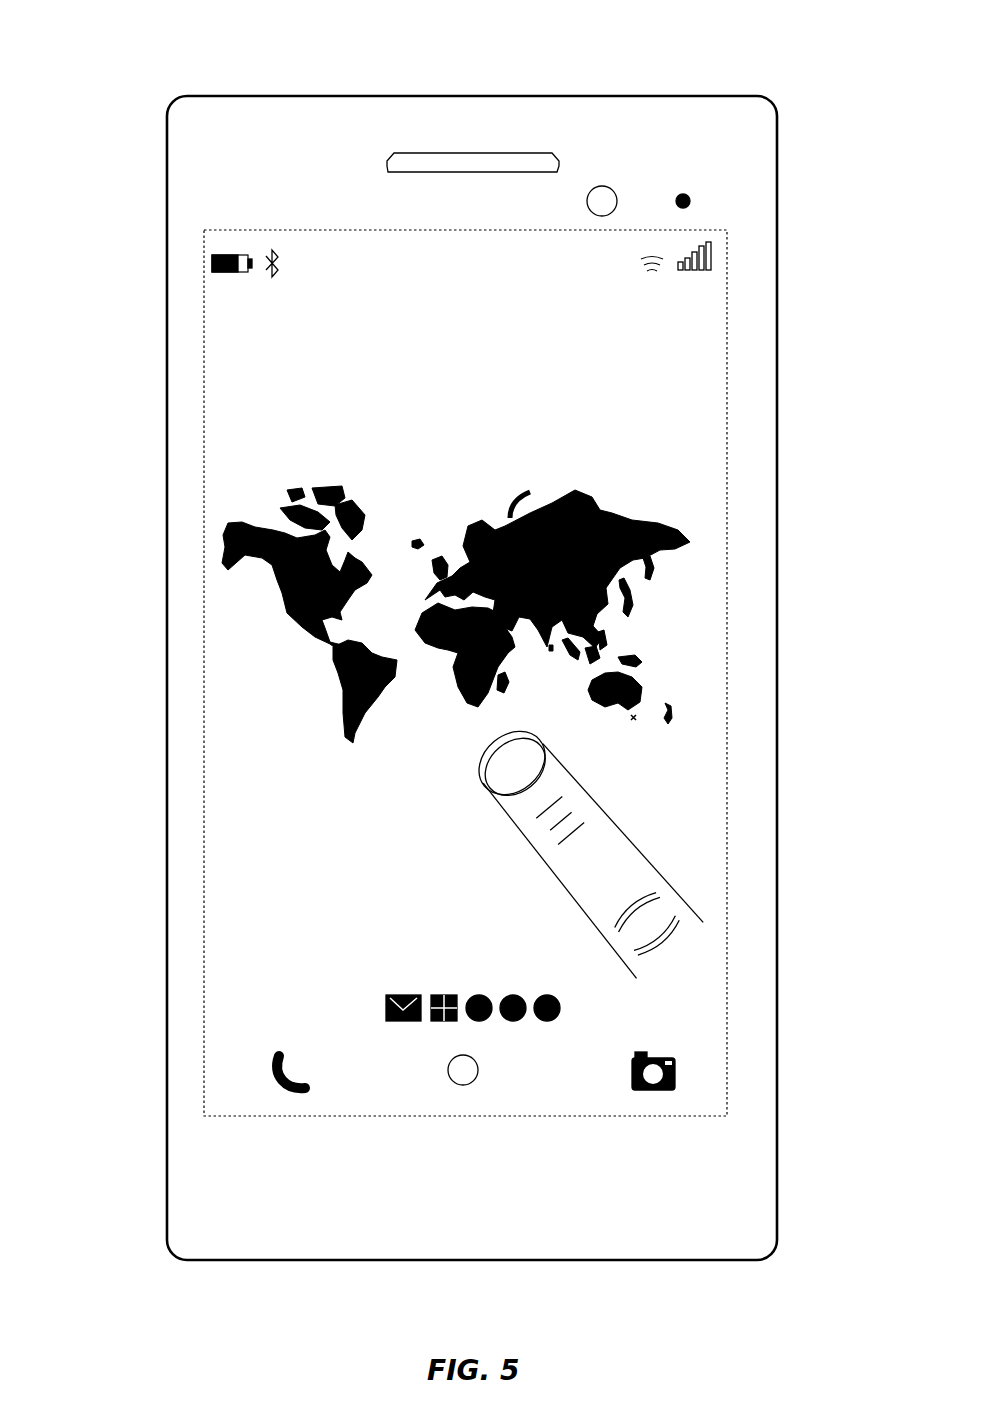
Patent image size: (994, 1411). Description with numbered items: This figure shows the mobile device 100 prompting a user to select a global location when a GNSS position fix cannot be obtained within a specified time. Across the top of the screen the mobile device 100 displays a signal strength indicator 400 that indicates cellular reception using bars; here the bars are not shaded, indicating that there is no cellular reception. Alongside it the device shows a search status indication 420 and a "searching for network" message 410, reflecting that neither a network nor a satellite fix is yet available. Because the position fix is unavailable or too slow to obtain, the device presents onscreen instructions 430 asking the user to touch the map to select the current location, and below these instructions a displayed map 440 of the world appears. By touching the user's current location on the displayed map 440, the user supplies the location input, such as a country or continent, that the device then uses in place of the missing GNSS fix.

The mobile device 100 is at (166, 690).
The signal strength indicator 400 is at (713, 250).
The searching for network indication 410 is at (558, 237).
The search status indication 420 is at (328, 243).
The onscreen instructions 430 is at (615, 385).
The displayed map 440 is at (680, 528).